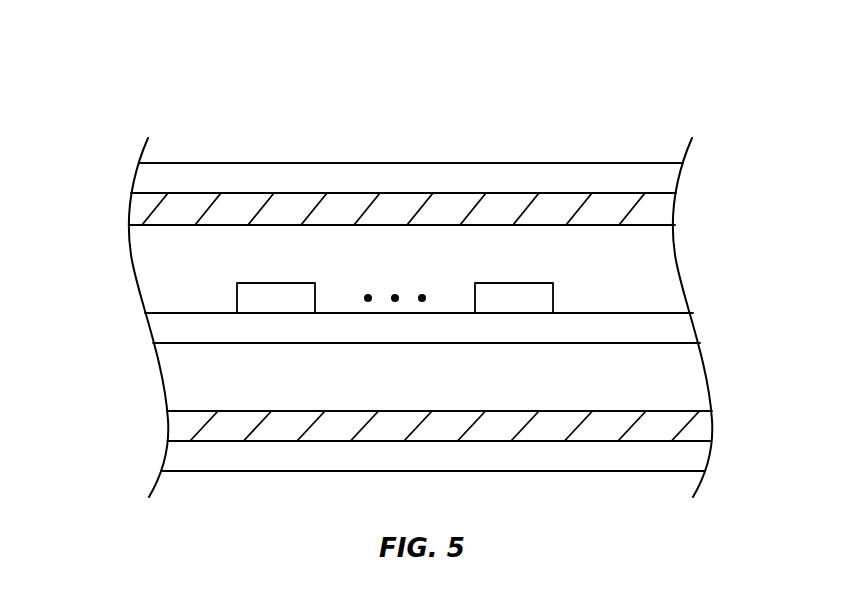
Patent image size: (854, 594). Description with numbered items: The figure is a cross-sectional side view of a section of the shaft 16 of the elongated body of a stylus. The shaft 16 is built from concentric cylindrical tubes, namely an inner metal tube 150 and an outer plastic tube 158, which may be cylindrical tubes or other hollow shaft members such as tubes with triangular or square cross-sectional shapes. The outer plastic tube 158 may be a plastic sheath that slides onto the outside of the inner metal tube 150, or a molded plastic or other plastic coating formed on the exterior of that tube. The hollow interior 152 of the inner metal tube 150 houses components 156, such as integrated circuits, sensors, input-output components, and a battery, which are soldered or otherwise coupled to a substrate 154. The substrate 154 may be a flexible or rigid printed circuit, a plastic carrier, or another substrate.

The shaft 16 is at (170, 105).
The inner metal tube 150 is at (672, 204).
The hollow interior 152 is at (100, 222).
The substrate 154 is at (690, 327).
The components 156 is at (476, 292).
The outer plastic tube 158 is at (679, 178).